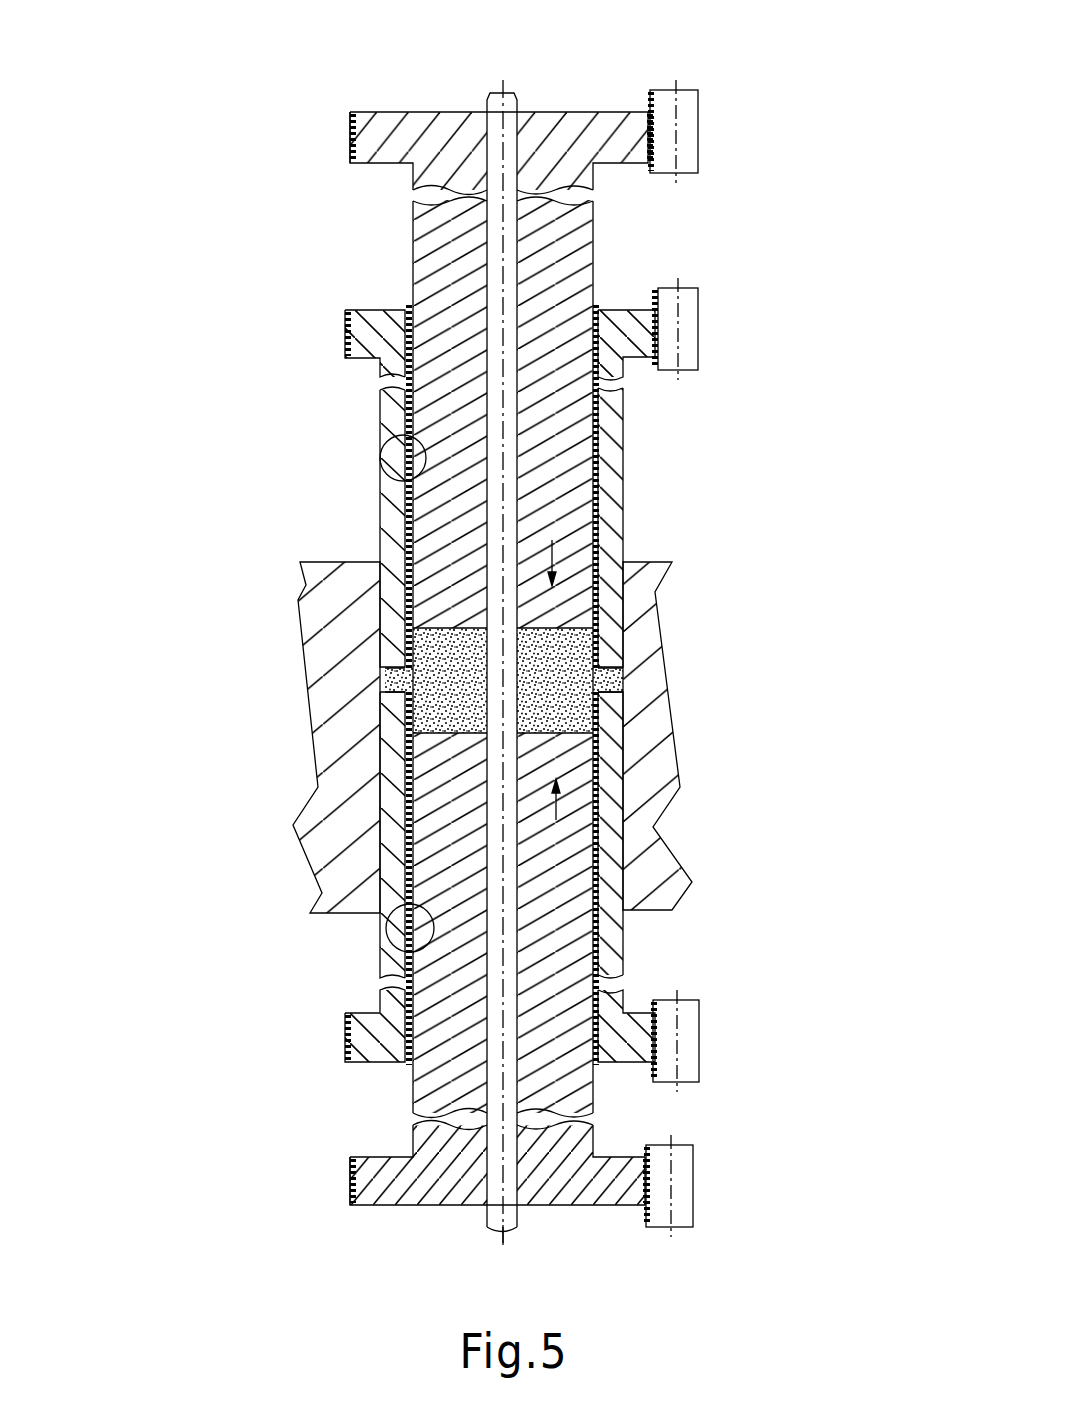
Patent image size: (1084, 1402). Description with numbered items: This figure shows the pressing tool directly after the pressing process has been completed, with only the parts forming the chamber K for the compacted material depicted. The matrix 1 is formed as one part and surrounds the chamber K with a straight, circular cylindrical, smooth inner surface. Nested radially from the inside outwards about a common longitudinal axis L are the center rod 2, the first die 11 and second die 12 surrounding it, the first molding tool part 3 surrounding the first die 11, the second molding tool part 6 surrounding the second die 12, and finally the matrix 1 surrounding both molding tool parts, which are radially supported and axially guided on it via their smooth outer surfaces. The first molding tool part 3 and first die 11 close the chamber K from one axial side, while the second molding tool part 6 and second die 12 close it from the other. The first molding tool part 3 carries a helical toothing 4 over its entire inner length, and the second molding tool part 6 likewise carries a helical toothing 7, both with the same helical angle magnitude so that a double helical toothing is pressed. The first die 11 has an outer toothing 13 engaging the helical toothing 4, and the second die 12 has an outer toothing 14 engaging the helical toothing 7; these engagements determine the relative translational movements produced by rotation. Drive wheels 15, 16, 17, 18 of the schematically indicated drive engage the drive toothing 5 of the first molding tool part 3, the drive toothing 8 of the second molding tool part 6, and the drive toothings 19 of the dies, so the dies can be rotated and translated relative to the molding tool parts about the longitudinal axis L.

The matrix 1 is at (318, 607).
The center rod 2 is at (490, 135).
The first molding tool part 3 is at (392, 405).
The helical toothing 4 is at (385, 437).
The drive toothing 5 is at (348, 335).
The second molding tool part 6 is at (392, 735).
The helical toothing 7 is at (393, 950).
The drive toothing 8 is at (347, 1042).
The first die 11 is at (440, 153).
The second die 12 is at (373, 1172).
The outer toothing 13 is at (397, 545).
The outer toothing 14 is at (402, 788).
The drive wheel 15 is at (688, 133).
The drive wheel 16 is at (695, 327).
The drive wheel 17 is at (690, 1015).
The drive wheel 18 is at (680, 1205).
The drive toothing 19 is at (357, 158).
The chamber K is at (665, 563).
The longitudinal axis L is at (500, 1233).